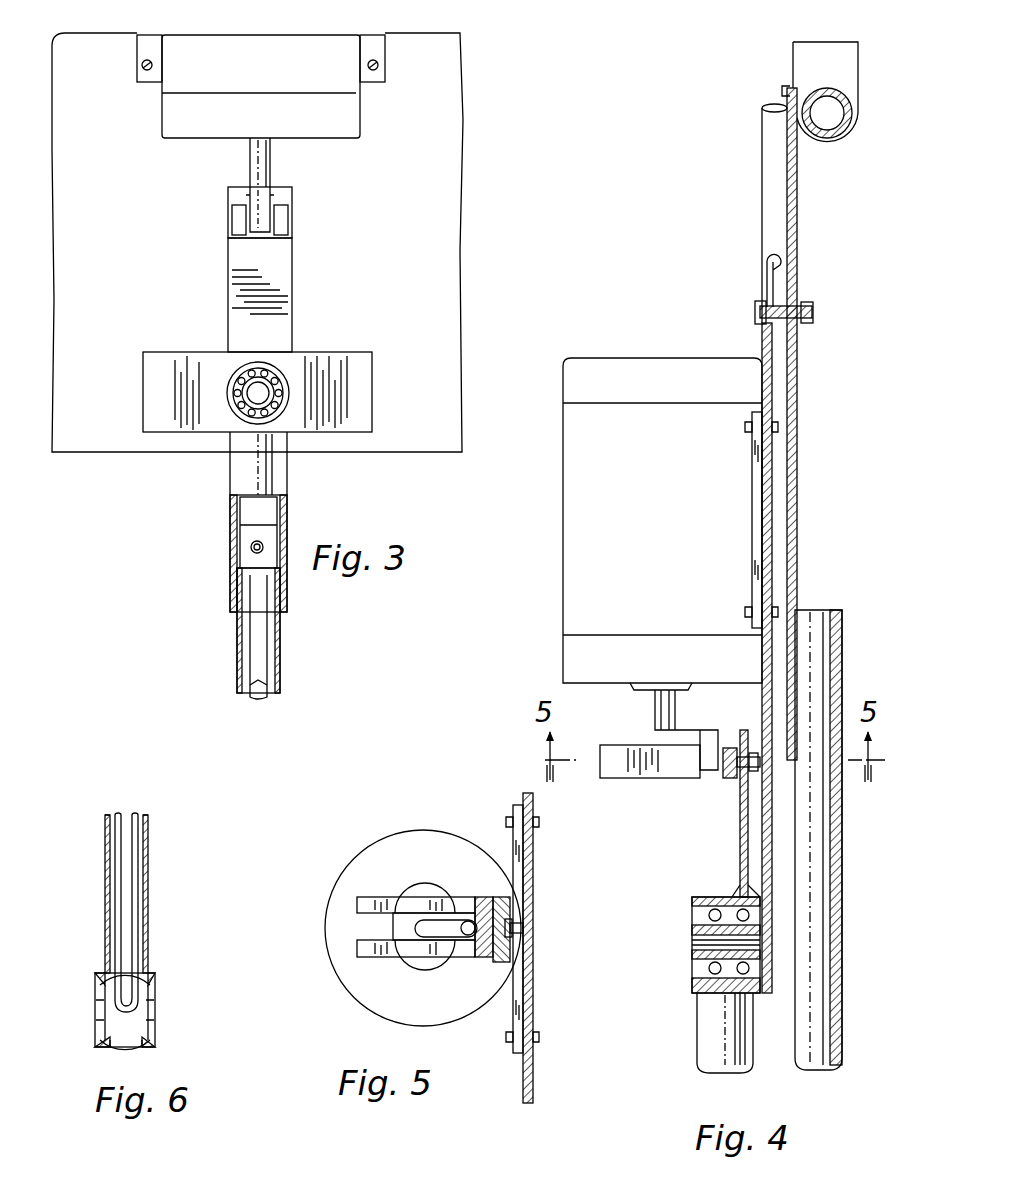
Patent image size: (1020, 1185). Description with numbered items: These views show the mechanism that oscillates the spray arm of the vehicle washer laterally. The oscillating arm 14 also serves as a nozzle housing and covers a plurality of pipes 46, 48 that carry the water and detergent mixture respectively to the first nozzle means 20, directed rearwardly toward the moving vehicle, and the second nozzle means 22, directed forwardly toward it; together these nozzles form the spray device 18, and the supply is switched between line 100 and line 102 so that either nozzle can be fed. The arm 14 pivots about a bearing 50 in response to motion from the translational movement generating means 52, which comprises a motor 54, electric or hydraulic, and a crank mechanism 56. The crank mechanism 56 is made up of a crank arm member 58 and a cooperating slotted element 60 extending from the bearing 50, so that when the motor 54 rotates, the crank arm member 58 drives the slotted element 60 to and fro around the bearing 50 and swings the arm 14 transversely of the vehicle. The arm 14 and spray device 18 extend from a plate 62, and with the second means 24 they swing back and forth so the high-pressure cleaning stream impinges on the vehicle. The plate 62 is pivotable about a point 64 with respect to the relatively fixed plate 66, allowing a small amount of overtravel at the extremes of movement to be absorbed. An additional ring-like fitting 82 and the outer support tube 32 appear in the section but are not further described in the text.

In FIG. 3, the oscillating arm 14 is at (228, 510).
In FIG. 4, the oscillating arm 14 is at (705, 1040).
In FIG. 6, the spray device 18 is at (165, 1020).
In FIG. 6, the first nozzle means 20 is at (155, 1000).
In FIG. 6, the second nozzle means 22 is at (93, 990).
In FIG. 3, the second means 24 is at (332, 470).
In FIG. 4, the second means 24 is at (672, 986).
In FIG. 4, the support tube 32 is at (818, 920).
In FIG. 3, the pipe 46 is at (255, 697).
In FIG. 3, the pipe 48 is at (255, 635).
In FIG. 3, the bearing 50 is at (232, 385).
In FIG. 4, the bearing 50 is at (695, 897).
In FIG. 3, the translational movement generating means 52 is at (290, 152).
In FIG. 3, the motor 54 is at (172, 108).
In FIG. 4, the motor 54 is at (612, 365).
In FIG. 5, the motor 54 is at (427, 838).
In FIG. 3, the crank mechanism 56 is at (226, 220).
In FIG. 4, the crank arm member 58 is at (690, 732).
In FIG. 5, the crank arm member 58 is at (440, 932).
In FIG. 4, the slotted element 60 is at (665, 765).
In FIG. 5, the slotted element 60 is at (377, 897).
In FIG. 3, the plate 62 is at (455, 180).
In FIG. 4, the plate 62 is at (770, 487).
In FIG. 5, the plate 62 is at (535, 970).
In FIG. 4, the pivot point 64 is at (770, 300).
In FIG. 4, the fixed plate 66 is at (800, 345).
In FIG. 4, the ring 82 is at (840, 132).
In FIG. 6, the line 100 is at (135, 848).
In FIG. 6, the line 102 is at (118, 823).